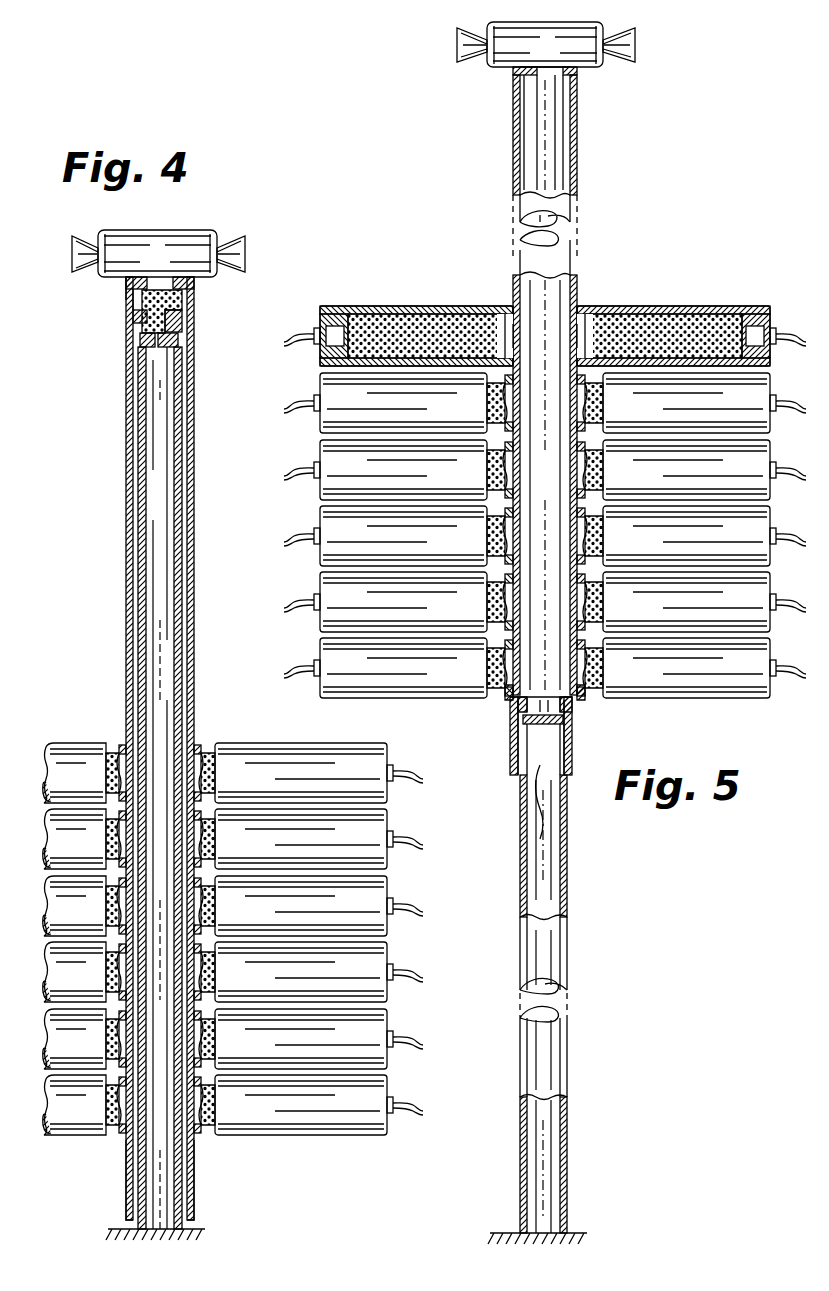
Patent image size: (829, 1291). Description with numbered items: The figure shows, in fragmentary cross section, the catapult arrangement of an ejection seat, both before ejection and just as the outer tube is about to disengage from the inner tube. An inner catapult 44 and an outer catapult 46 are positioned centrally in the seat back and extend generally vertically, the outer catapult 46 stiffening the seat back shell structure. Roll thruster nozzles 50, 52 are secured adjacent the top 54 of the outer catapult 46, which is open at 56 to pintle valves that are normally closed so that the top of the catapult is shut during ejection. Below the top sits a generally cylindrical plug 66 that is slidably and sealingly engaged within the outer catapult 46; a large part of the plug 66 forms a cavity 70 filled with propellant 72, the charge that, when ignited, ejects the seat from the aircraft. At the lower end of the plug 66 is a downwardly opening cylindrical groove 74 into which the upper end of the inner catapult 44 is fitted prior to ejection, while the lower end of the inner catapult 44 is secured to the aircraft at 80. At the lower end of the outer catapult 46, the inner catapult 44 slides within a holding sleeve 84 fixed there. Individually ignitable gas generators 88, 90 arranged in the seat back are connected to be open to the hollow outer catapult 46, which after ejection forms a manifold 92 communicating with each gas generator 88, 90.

In FIG. 4, the inner catapult 44 is at (140, 500).
In FIG. 5, the inner catapult 44 is at (567, 893).
In FIG. 4, the outer catapult 46 is at (194, 470).
In FIG. 5, the outer catapult 46 is at (577, 290).
In FIG. 4, the roll thruster nozzle 50 is at (92, 250).
In FIG. 5, the roll thruster nozzle 50 is at (472, 56).
In FIG. 4, the roll thruster nozzle 52 is at (230, 246).
In FIG. 5, the roll thruster nozzle 52 is at (635, 42).
In FIG. 4, the top of the outer catapult 54 is at (132, 289).
In FIG. 5, the top of the outer catapult 54 is at (577, 95).
In FIG. 4, the opening 56 is at (148, 276).
In FIG. 5, the opening 56 is at (546, 68).
In FIG. 4, the plug 66 is at (168, 321).
In FIG. 5, the plug 66 is at (534, 790).
In FIG. 4, the cavity 70 is at (174, 335).
In FIG. 5, the cavity 70 is at (563, 716).
In FIG. 4, the propellant 72 is at (162, 344).
In FIG. 4, the cylindrical groove 74 is at (141, 336).
In FIG. 4, the aircraft attachment 80 is at (184, 1229).
In FIG. 5, the aircraft attachment 80 is at (567, 1232).
In FIG. 4, the holding sleeve 84 is at (194, 1180).
In FIG. 5, the holding sleeve 84 is at (520, 775).
In FIG. 4, the gas generator 88 is at (86, 789).
In FIG. 5, the gas generator 88 is at (398, 306).
In FIG. 4, the gas generator 90 is at (270, 789).
In FIG. 5, the gas generator 90 is at (665, 308).
In FIG. 5, the manifold 92 is at (562, 490).